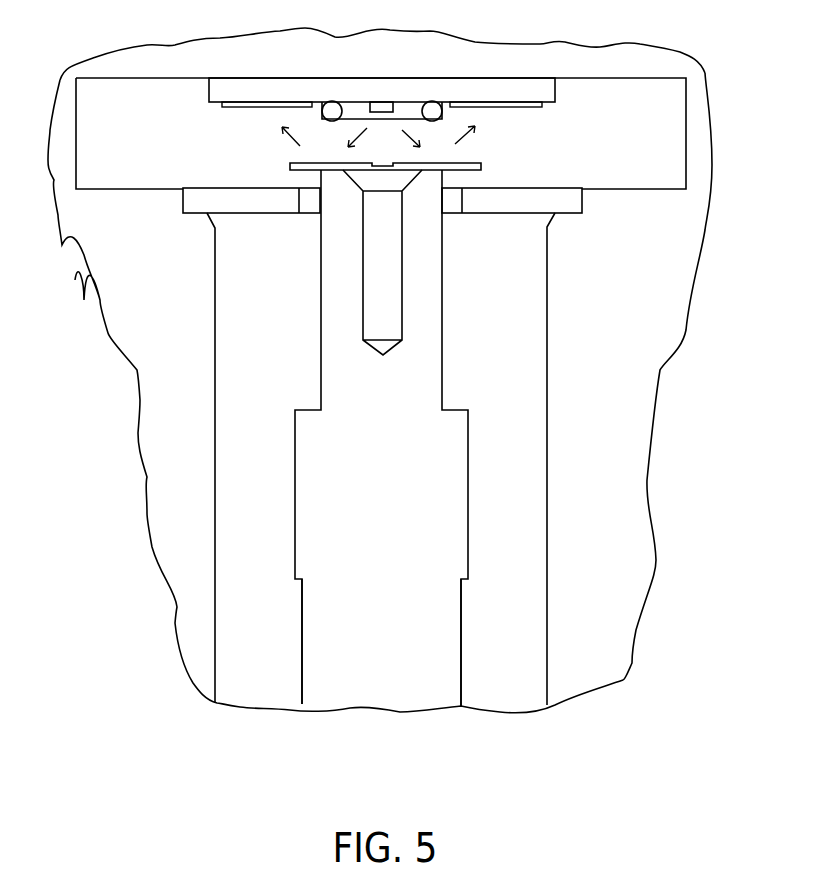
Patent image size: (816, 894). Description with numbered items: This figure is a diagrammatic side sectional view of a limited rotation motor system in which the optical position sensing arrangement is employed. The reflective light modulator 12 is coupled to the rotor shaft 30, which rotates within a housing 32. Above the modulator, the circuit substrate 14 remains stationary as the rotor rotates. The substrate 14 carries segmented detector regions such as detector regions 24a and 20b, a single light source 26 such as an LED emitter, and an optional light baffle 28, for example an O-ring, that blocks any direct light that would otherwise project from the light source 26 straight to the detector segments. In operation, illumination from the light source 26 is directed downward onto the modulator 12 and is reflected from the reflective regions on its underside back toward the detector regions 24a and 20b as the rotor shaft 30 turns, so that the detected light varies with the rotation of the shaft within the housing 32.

The reflective light modulator 12 is at (482, 165).
The circuit substrate 14 is at (557, 90).
The segmented detector region 20b is at (527, 105).
The segmented detector region 24a is at (252, 107).
The light source 26 is at (382, 102).
The light baffle 28 is at (432, 101).
The rotor shaft 30 is at (460, 688).
The housing 32 is at (540, 482).